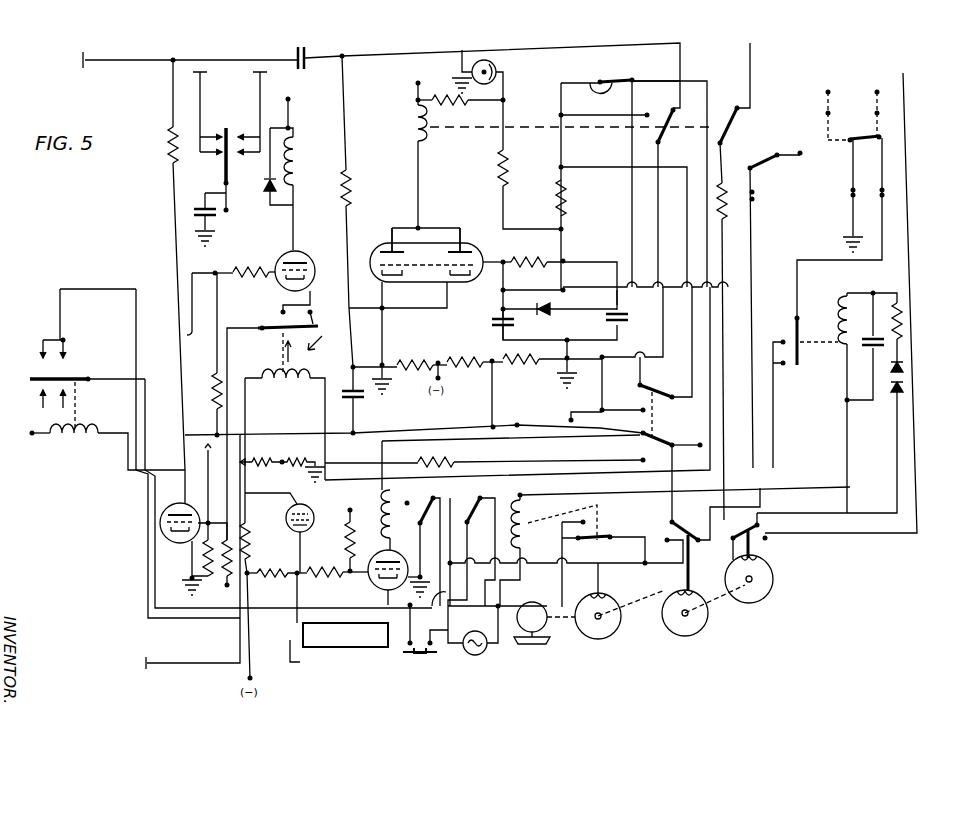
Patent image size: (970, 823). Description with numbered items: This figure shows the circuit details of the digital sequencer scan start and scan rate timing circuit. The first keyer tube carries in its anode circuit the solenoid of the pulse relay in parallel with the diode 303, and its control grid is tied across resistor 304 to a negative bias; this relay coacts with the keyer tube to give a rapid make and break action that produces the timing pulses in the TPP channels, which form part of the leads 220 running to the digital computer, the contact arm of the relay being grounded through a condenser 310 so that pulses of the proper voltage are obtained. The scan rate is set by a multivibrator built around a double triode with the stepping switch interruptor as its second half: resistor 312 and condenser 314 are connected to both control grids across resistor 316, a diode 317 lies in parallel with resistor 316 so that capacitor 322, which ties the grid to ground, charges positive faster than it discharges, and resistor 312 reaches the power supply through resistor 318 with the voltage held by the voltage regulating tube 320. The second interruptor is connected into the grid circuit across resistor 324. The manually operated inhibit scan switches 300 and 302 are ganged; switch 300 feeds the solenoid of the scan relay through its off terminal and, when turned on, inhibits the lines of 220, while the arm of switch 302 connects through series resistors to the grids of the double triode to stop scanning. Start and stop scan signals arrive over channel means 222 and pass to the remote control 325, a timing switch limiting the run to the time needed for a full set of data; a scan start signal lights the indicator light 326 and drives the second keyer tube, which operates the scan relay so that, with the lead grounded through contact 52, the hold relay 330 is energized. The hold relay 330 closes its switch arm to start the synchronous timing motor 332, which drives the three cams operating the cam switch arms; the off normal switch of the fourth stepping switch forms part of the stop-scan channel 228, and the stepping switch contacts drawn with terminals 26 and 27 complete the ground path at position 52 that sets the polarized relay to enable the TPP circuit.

The TPP leads 220 is at (201, 80).
The condenser 310 is at (190, 206).
The diode 303 is at (294, 192).
The voltage regulating tube 320 is at (462, 64).
The resistor 318 is at (476, 110).
The resistor 312 is at (502, 182).
The resistor 316 is at (546, 250).
The condenser 314 is at (614, 304).
The diode 317 is at (560, 310).
The capacitor 322 is at (497, 316).
The channel 228 is at (626, 98).
The resistor 324 is at (726, 219).
The switch contact 26 is at (826, 139).
The switch contact 27 is at (889, 88).
The contact 52 is at (880, 136).
The inhibit scan switch 302 is at (670, 405).
The inhibit scan switch 300 is at (654, 452).
The resistor 304 is at (215, 389).
The indicator light 326 is at (300, 494).
The hold relay 330 is at (523, 494).
The synchronous timing motor 332 is at (532, 640).
The channel means 222 is at (298, 670).
The remote control 325 is at (373, 644).